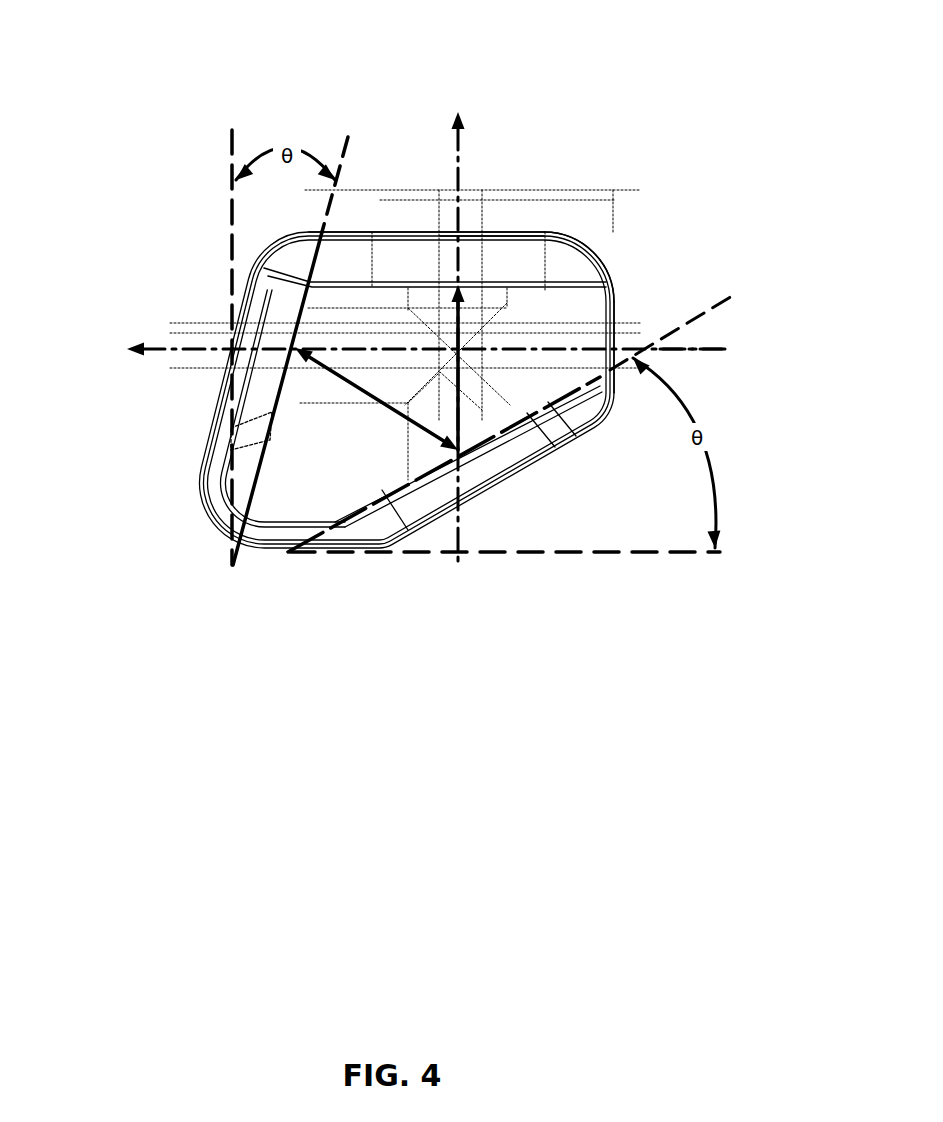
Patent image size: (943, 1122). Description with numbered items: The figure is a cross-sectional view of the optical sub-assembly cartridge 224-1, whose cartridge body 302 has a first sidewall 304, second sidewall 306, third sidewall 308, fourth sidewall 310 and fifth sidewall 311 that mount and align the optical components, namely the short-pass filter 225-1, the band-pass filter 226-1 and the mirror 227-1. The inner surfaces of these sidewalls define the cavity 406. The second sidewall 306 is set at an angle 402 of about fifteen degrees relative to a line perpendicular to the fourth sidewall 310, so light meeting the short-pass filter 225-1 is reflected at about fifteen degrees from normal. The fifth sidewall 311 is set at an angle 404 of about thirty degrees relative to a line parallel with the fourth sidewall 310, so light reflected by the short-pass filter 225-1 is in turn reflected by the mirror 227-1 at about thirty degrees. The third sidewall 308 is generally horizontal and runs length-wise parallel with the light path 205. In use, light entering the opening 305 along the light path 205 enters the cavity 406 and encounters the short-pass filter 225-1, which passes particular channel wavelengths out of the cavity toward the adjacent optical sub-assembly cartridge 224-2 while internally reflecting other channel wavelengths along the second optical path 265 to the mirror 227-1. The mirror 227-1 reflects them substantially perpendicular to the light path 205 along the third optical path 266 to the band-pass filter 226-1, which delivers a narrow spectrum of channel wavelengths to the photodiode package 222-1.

The optical sub-assembly cartridge 224-1 is at (130, 178).
The cartridge body 302 is at (360, 236).
The third sidewall 308 is at (475, 232).
The band-pass filter 226-1 is at (515, 260).
The first sidewall 304 is at (608, 275).
The cavity 406 is at (597, 318).
The opening 305 is at (636, 323).
The short-pass filter 225-1 is at (253, 407).
The fifth sidewall 311 is at (527, 466).
The mirror 227-1 is at (450, 482).
The fourth sidewall 310 is at (284, 553).
The second sidewall 306 is at (207, 473).
The angle 402 is at (232, 182).
The angle 404 is at (720, 553).
The photodiode package 222-1 is at (462, 305).
The adjacent optical sub-assembly cartridge 224-2 is at (390, 349).
The light path 205 is at (704, 350).
The second optical path 265 is at (368, 393).
The third optical path 266 is at (462, 317).